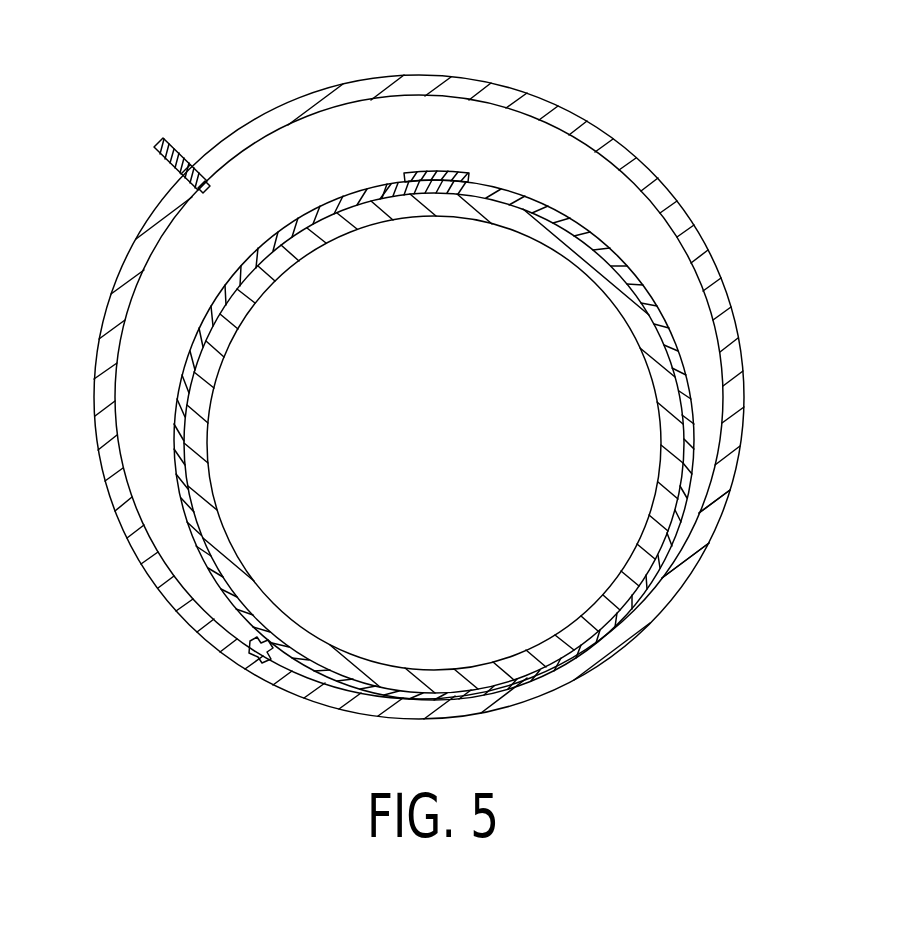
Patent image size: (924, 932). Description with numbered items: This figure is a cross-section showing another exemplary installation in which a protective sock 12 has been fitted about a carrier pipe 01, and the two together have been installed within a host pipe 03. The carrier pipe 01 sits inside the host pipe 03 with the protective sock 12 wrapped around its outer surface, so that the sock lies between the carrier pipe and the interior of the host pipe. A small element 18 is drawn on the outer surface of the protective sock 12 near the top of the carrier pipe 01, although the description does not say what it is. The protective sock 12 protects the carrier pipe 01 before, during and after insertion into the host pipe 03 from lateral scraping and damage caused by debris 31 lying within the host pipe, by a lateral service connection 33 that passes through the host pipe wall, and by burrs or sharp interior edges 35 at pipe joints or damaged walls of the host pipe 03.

The host pipe 03 is at (258, 111).
The carrier pipe 01 is at (538, 250).
The protective sock 12 is at (580, 228).
The patch element 18 is at (470, 184).
The debris 31 is at (260, 663).
The lateral service connection 33 is at (162, 175).
The burrs or sharp interior edges 35 is at (712, 299).